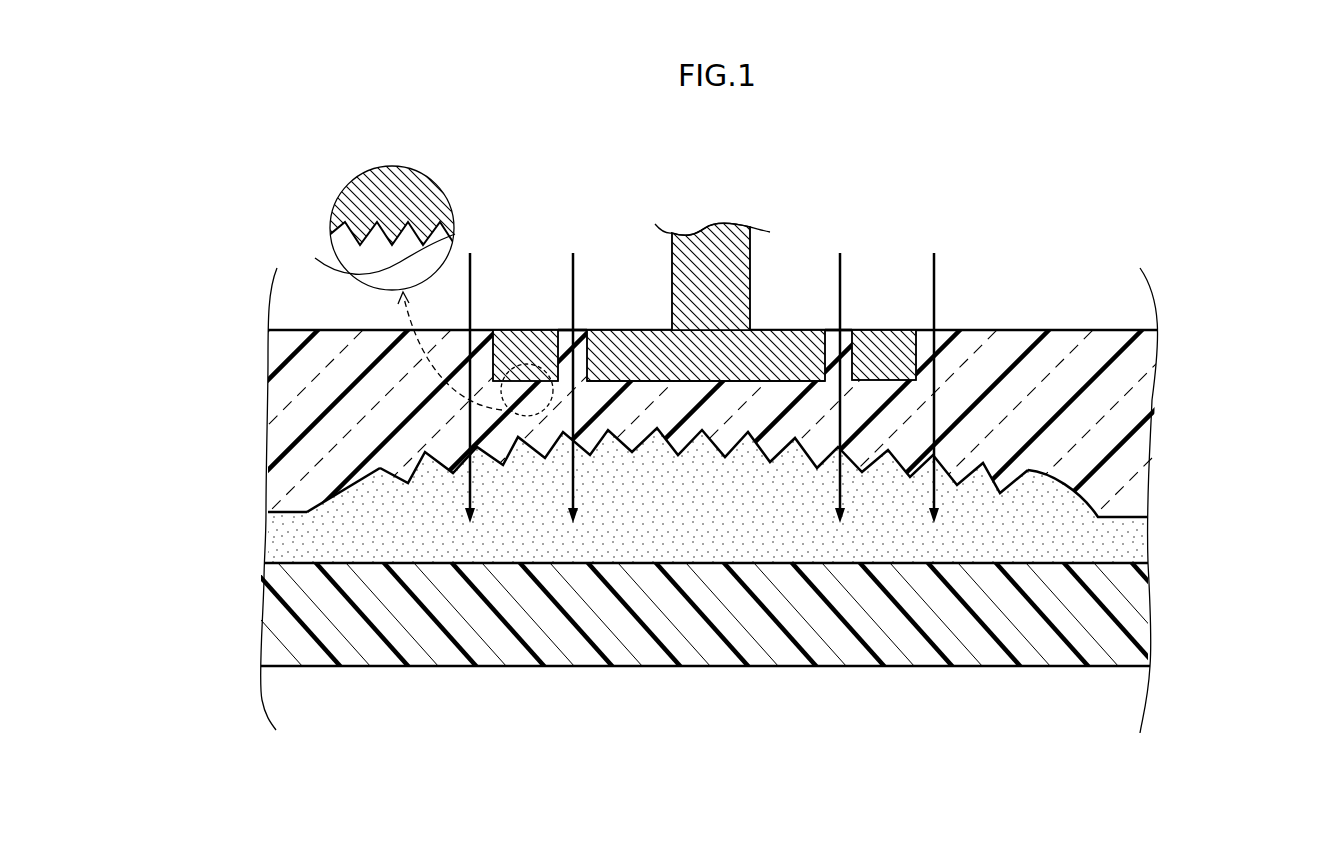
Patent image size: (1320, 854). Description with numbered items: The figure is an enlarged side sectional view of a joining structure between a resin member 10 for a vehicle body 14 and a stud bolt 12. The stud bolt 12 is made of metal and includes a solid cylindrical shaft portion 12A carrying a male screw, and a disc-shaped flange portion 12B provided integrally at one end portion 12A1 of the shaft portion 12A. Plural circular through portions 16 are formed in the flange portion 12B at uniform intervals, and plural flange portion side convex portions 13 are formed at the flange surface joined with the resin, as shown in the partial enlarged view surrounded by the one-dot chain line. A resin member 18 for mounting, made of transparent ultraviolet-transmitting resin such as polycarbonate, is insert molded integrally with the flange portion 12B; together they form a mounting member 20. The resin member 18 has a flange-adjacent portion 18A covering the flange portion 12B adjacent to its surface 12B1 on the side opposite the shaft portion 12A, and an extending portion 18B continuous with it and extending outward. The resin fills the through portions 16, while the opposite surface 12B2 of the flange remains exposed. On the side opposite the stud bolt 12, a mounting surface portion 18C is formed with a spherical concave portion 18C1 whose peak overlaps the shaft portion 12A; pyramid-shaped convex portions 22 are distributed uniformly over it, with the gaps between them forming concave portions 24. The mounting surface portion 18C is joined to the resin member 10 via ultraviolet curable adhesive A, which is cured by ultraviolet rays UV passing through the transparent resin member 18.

The resin member for a vehicle body 10 is at (717, 649).
The vehicle body 14 is at (1033, 653).
The stud bolt 12 is at (704, 354).
The shaft portion 12A is at (746, 276).
The one end portion 12A1 is at (722, 323).
The flange portion 12B is at (704, 386).
The surface 12B1 is at (790, 383).
The surface 12B2 is at (655, 328).
The flange portion side convex portions 13 is at (342, 234).
The through portions 16 is at (580, 328).
The resin member for mounting 18 is at (660, 435).
The flange-adjacent portion 18A is at (893, 421).
The extending portion 18B is at (1146, 477).
The mounting surface portion 18C is at (285, 516).
The spherical concave portion 18C1 is at (353, 498).
The mounting member 20 is at (1008, 222).
The convex portions 22 is at (507, 452).
The concave portions 24 is at (380, 470).
The ultraviolet curable adhesive A is at (1120, 542).
The ultraviolet rays UV is at (573, 255).